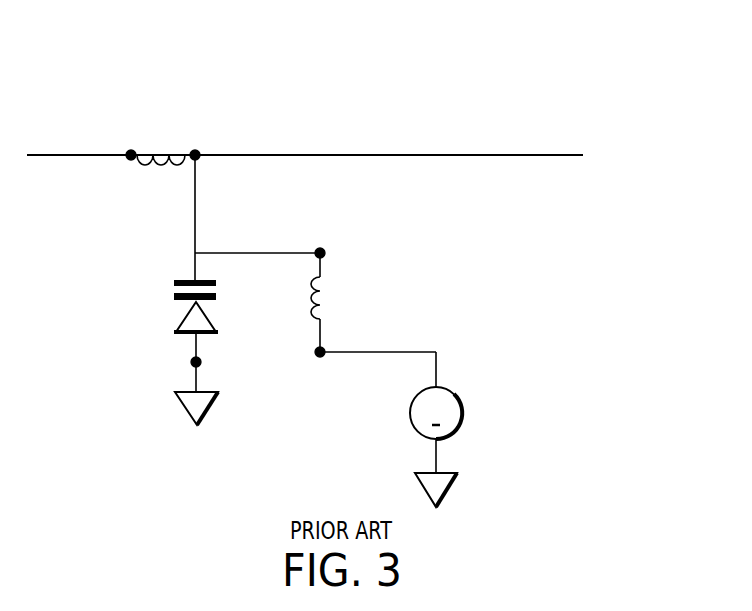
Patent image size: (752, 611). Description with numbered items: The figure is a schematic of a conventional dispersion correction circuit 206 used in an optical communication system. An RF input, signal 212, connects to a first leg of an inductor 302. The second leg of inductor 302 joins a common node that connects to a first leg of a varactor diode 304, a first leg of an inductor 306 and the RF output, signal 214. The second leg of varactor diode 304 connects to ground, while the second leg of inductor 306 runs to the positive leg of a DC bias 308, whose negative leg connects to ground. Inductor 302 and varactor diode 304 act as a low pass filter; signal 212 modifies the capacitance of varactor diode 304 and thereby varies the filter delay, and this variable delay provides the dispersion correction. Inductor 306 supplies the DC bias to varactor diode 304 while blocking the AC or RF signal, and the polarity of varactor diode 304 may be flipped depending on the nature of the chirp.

The dispersion correction circuit 206 is at (625, 60).
The signal 212 is at (68, 157).
The signal 214 is at (542, 157).
The inductor 302 is at (160, 167).
The varactor diode 304 is at (178, 322).
The inductor 306 is at (309, 292).
The DC bias 308 is at (410, 413).